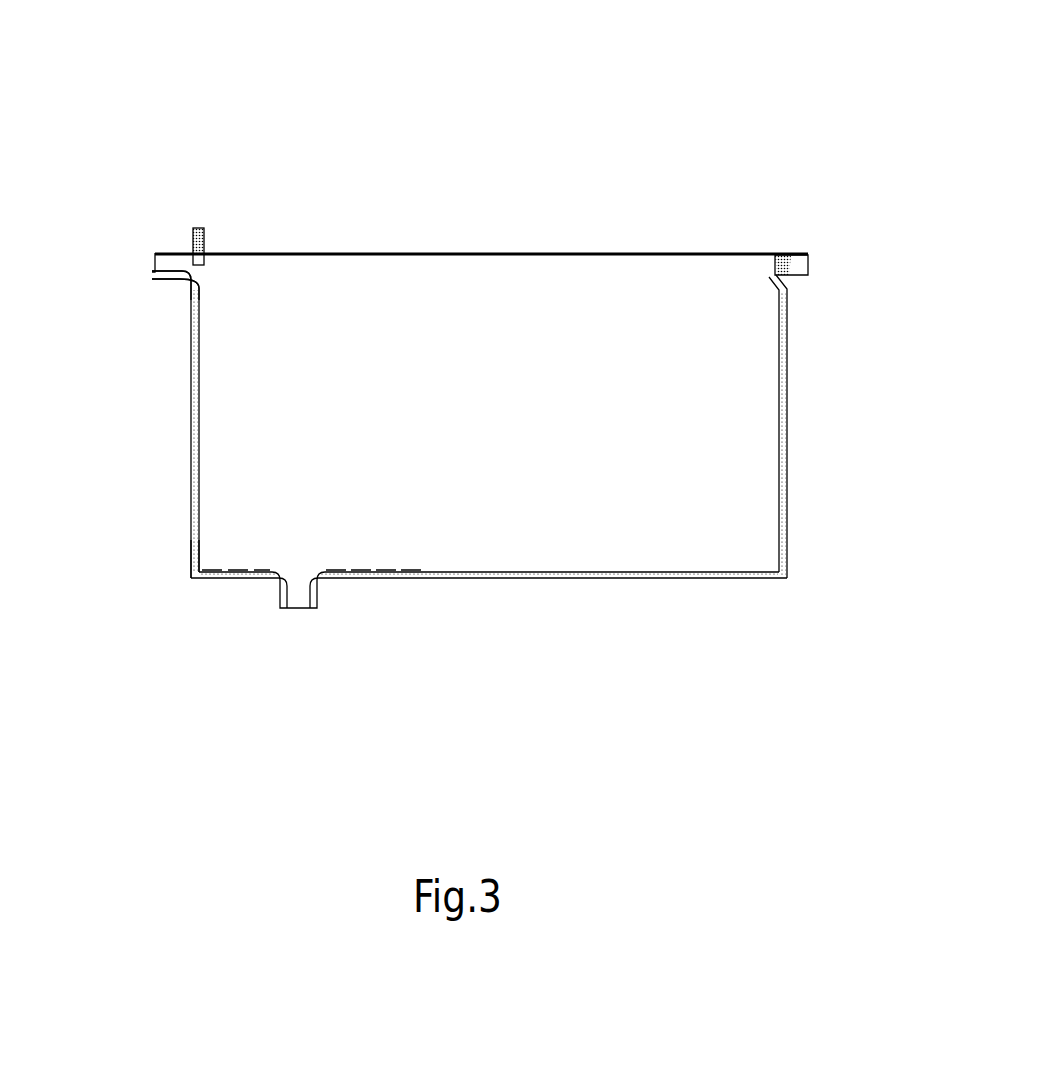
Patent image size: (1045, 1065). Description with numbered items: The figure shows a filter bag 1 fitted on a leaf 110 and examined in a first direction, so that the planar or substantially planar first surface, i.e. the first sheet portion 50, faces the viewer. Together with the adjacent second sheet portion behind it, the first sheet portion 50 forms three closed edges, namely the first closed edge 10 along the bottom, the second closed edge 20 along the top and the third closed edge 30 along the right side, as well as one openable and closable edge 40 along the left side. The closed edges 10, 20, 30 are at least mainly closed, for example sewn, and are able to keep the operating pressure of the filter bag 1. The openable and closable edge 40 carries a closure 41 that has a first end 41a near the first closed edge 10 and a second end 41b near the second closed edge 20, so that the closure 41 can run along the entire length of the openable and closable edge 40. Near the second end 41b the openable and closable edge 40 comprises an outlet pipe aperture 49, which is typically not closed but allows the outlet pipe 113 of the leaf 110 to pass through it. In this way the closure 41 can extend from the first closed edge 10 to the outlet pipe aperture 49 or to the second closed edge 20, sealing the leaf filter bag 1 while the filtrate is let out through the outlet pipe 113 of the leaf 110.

The filter bag 1 is at (205, 132).
The first closed edge 10 is at (494, 608).
The second closed edge 20 is at (441, 225).
The third closed edge 30 is at (835, 431).
The openable and closable edge 40 is at (145, 520).
The closure 41 is at (192, 393).
The first end of the closure 41a is at (192, 583).
The second end of the closure 41b is at (158, 278).
The outlet pipe aperture 49 is at (128, 258).
The first sheet portion 50 is at (496, 400).
The leaf 110 is at (723, 203).
The outlet pipe 113 is at (148, 240).